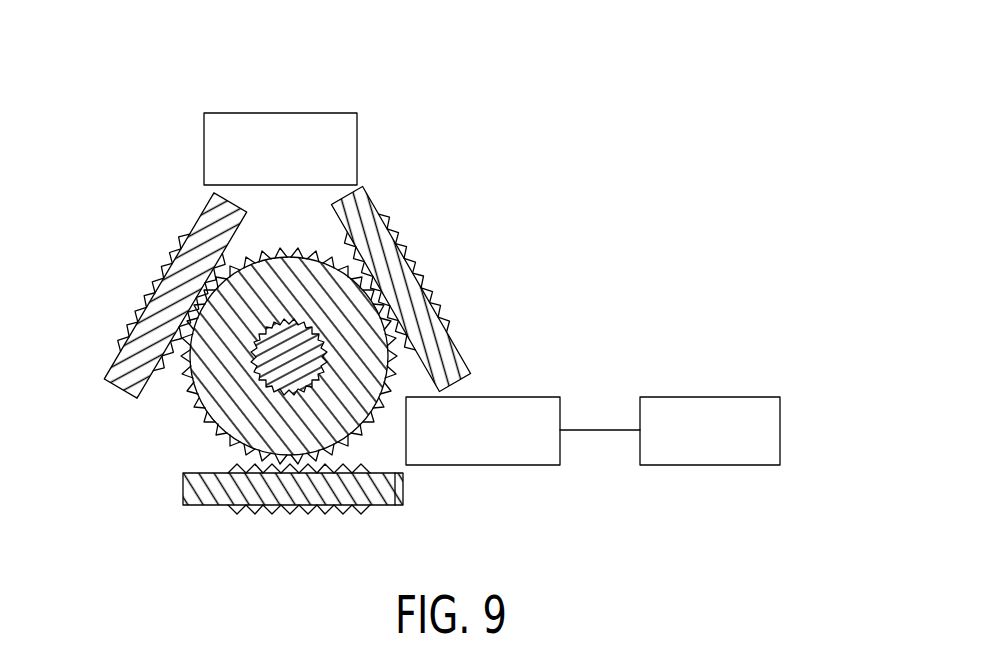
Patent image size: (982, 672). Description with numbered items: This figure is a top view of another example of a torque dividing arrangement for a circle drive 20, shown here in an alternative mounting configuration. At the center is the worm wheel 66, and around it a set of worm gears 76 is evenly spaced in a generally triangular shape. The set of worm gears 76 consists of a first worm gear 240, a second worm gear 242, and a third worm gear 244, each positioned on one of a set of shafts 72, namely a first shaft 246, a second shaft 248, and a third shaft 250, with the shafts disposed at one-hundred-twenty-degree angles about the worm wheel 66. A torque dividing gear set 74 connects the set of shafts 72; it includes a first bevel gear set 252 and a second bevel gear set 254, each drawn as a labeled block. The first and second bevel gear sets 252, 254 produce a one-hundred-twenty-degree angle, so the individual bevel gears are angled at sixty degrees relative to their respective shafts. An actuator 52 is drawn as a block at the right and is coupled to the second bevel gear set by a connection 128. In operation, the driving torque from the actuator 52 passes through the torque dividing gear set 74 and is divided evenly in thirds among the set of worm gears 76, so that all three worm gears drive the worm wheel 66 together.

The circle drive 20 is at (133, 176).
The actuator 52 is at (710, 397).
The worm wheel 66 is at (307, 290).
The set of shafts 72 is at (760, 228).
The torque dividing gear set 74 is at (760, 5).
The set of worm gears 76 is at (688, 115).
The shaft connection 128 is at (599, 430).
The first worm gear 240 is at (445, 263).
The second worm gear 242 is at (134, 271).
The third worm gear 244 is at (293, 522).
The first shaft 246 is at (403, 268).
The second shaft 248 is at (180, 287).
The third shaft 250 is at (282, 490).
The first bevel gear set 252 is at (508, 465).
The second bevel gear set 254 is at (281, 113).